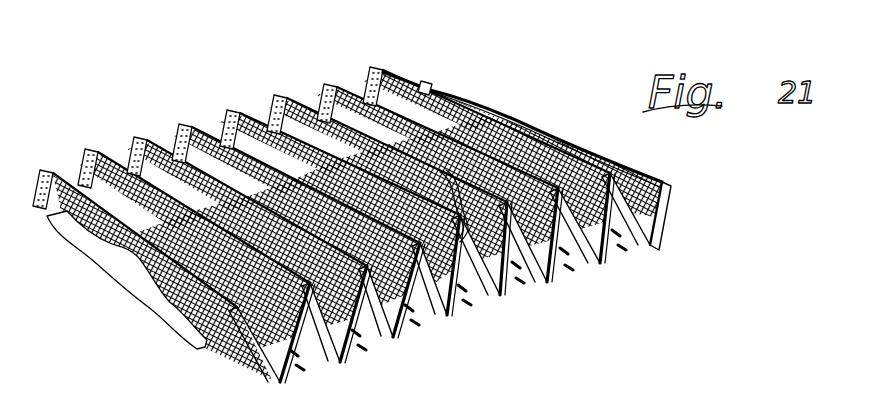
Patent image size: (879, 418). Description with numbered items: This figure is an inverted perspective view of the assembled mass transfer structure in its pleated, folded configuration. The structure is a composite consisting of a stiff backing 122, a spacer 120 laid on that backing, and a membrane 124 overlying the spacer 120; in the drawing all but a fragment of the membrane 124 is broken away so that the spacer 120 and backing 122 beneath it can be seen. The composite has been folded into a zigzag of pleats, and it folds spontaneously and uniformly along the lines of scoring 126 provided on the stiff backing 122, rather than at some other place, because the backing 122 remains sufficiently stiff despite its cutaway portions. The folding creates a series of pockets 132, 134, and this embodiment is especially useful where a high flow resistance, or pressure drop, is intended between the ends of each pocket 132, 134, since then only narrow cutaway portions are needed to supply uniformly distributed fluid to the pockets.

The spacer 120 is at (165, 292).
The stiff backing 122 is at (123, 280).
The membrane 124 is at (323, 140).
The lines of scoring 126 is at (432, 128).
The pocket 132 is at (513, 132).
The pocket 134 is at (525, 277).